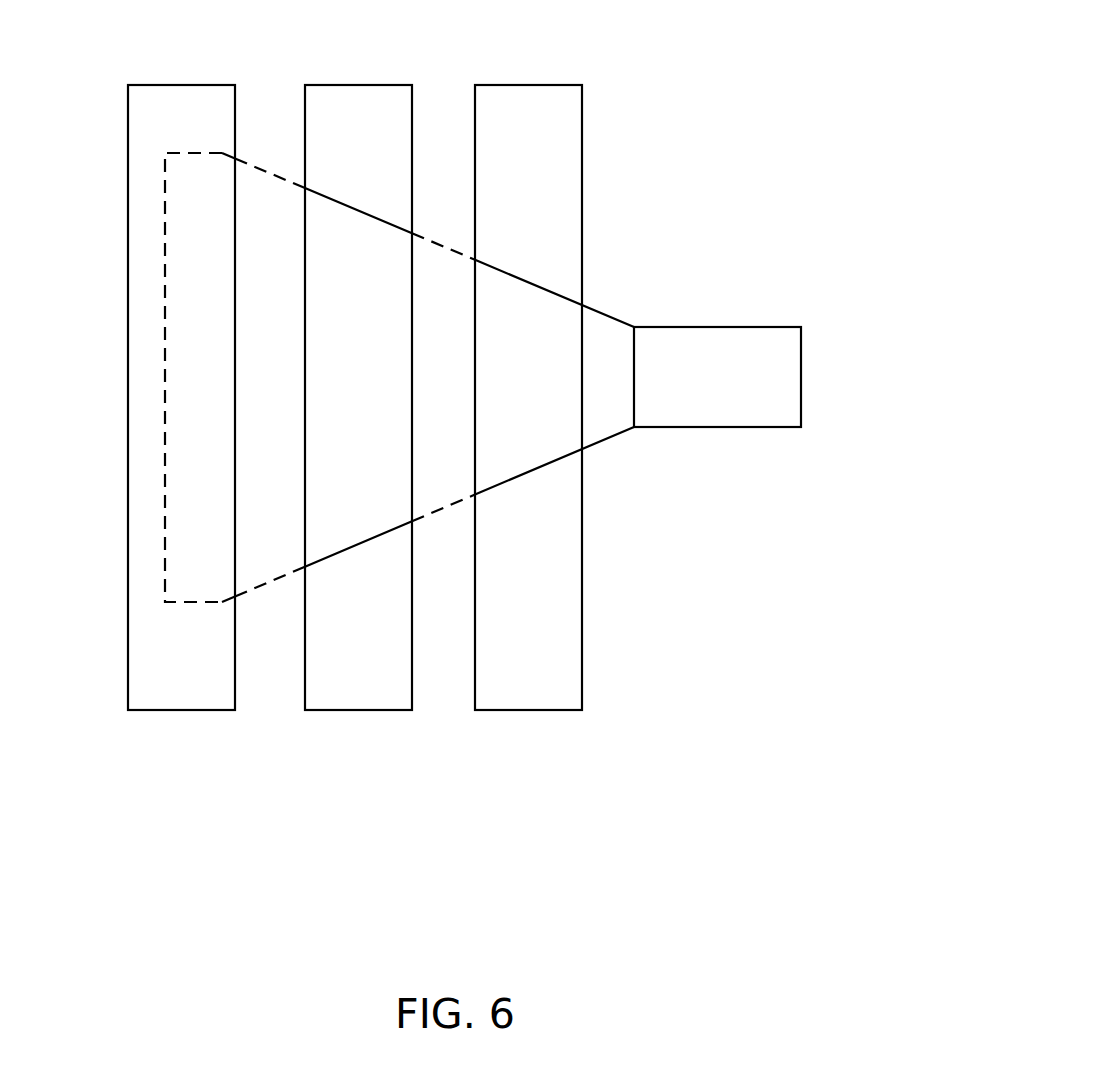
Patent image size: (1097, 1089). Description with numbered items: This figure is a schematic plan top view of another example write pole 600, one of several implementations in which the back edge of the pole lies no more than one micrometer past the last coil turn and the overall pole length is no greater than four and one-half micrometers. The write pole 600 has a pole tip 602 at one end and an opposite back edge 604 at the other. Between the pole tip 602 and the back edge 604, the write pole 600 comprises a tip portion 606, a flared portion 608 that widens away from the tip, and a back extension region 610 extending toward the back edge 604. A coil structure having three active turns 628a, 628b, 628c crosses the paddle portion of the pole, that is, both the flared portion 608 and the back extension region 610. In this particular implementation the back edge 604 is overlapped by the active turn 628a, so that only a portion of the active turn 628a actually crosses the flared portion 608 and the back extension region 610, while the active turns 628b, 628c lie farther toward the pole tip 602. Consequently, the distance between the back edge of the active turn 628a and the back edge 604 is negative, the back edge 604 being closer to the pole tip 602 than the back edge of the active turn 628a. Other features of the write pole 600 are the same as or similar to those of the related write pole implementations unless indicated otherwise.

The write pole 600 is at (664, 169).
The pole tip 602 is at (801, 395).
The back edge 604 is at (165, 520).
The tip portion 606 is at (702, 323).
The flared portion 608 is at (610, 449).
The back extension region 610 is at (158, 297).
The active turn 628a is at (181, 85).
The active turn 628b is at (358, 85).
The active turn 628c is at (542, 85).